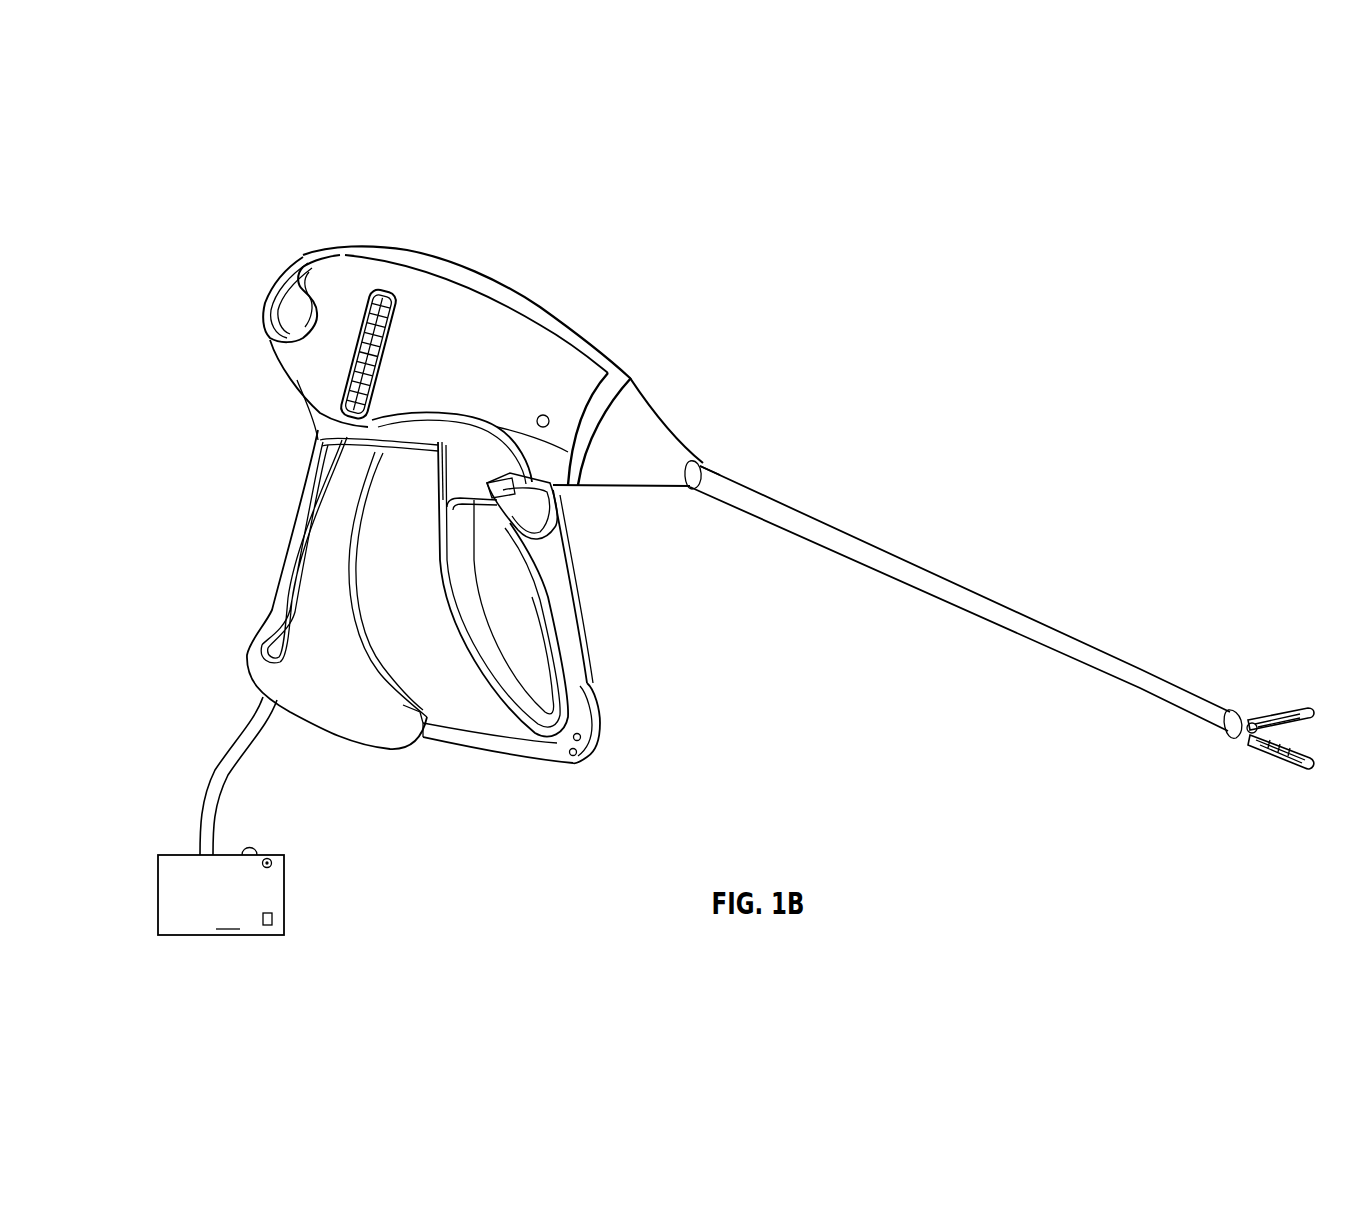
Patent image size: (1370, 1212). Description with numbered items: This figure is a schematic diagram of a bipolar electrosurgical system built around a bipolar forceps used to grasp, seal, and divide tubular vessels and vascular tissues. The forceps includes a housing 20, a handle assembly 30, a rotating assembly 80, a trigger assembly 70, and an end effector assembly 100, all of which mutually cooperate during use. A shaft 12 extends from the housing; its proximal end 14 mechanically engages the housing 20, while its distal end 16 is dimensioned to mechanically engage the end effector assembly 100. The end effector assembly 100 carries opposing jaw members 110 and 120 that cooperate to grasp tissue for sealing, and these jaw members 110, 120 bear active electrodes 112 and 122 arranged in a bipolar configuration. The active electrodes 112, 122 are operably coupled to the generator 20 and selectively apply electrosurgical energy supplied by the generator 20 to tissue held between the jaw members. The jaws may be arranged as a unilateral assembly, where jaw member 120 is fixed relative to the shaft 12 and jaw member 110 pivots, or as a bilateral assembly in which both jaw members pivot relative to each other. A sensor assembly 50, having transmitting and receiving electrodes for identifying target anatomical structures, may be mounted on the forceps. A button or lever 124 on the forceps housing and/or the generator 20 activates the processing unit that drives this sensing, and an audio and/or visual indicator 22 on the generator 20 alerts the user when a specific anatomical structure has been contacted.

The shaft 12 is at (1040, 624).
The proximal end 14 is at (733, 478).
The distal end 16 is at (1212, 700).
The housing 20 is at (535, 275).
The audio and/or visual indicator 22 is at (267, 853).
The handle assembly 30 is at (598, 665).
The sensor assembly 50 is at (383, 762).
The trigger assembly 70 is at (565, 521).
The rotating assembly 80 is at (378, 288).
The end effector assembly 100 is at (1286, 748).
The jaw member 110 is at (1292, 706).
The active electrode 112 is at (1300, 727).
The jaw member 120 is at (1292, 762).
The active electrode 122 is at (1331, 753).
The button or lever 124 is at (542, 410).